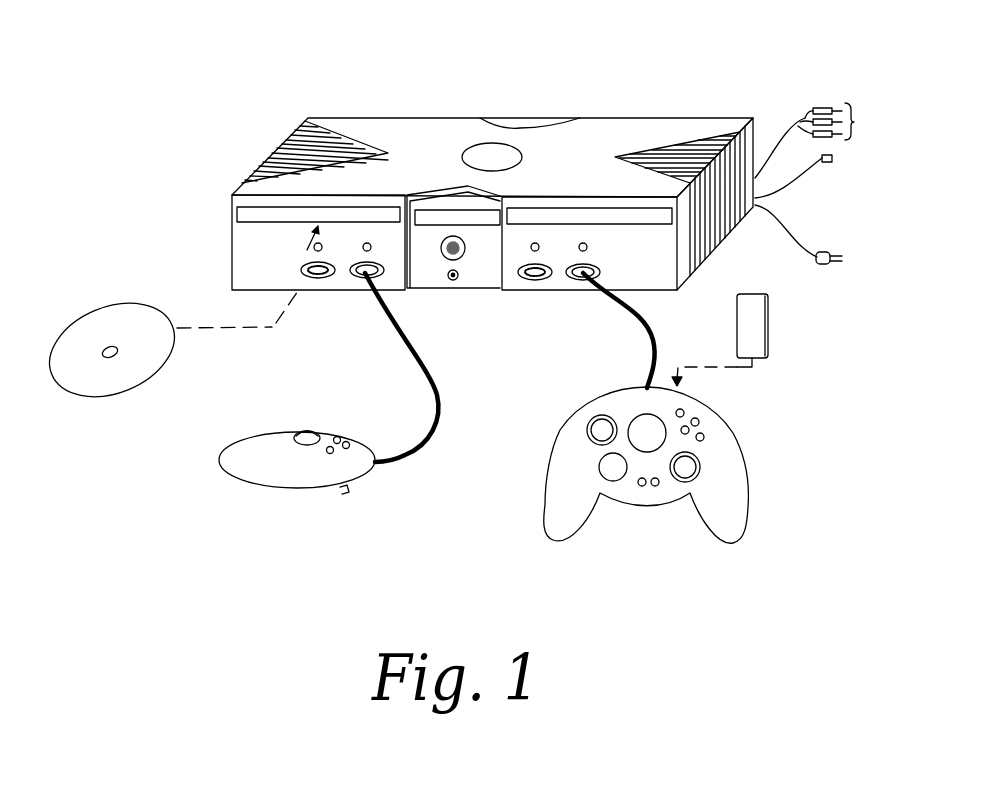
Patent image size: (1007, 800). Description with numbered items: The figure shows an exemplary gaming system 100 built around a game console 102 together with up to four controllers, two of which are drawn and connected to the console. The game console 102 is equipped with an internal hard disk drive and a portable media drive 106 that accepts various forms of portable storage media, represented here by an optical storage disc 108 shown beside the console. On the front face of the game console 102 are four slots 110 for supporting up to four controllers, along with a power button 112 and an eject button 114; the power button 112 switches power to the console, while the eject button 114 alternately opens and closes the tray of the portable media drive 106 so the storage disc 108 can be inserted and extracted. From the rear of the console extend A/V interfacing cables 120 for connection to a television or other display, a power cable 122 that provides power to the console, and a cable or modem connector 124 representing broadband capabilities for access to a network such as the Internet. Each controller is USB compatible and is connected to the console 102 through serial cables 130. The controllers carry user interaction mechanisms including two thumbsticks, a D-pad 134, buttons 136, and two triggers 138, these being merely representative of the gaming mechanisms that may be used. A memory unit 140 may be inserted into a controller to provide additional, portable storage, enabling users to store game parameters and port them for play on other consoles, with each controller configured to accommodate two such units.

The gaming system 100 is at (643, 36).
The game console 102 is at (350, 117).
The portable media drive 106 is at (247, 213).
The optical storage disc 108 is at (123, 390).
The slots 110 is at (362, 278).
The power button 112 is at (453, 282).
The eject button 114 is at (453, 236).
The A/V interfacing cables 120 is at (818, 106).
The power cable 122 is at (826, 263).
The cable or modem connector 124 is at (793, 177).
The serial cables 130 is at (428, 378).
The D-pad 134 is at (597, 465).
The buttons 136 is at (697, 420).
The triggers 138 is at (347, 490).
The memory unit 140 is at (770, 323).